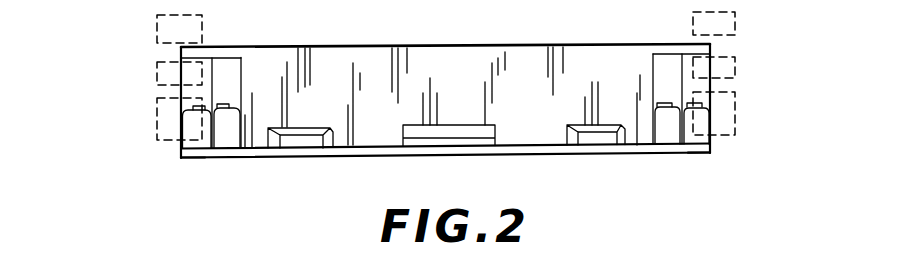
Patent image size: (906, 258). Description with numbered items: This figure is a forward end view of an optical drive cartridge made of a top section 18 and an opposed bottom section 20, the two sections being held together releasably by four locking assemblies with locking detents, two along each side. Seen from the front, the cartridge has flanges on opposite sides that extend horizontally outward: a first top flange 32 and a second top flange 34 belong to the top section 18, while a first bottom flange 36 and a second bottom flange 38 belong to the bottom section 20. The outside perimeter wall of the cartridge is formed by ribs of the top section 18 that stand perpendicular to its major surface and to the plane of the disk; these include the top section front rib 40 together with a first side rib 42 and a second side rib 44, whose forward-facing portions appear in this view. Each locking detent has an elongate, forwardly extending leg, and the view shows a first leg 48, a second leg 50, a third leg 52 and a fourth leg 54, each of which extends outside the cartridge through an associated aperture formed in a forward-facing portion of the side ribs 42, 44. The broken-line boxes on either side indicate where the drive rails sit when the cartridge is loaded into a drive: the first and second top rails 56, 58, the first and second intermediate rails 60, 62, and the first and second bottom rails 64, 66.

The top section 18 is at (460, 53).
The bottom section 20 is at (642, 152).
The first top flange 32 is at (181, 48).
The second top flange 34 is at (710, 45).
The first bottom flange 36 is at (185, 158).
The second bottom flange 38 is at (710, 152).
The top section front rib 40 is at (548, 127).
The first side rib 42 is at (229, 68).
The second side rib 44 is at (665, 63).
The first leg 48 is at (190, 128).
The second leg 50 is at (227, 137).
The third leg 52 is at (665, 130).
The fourth leg 54 is at (688, 125).
The first top rail 56 is at (157, 30).
The second top rail 58 is at (735, 18).
The first intermediate rail 60 is at (157, 80).
The second intermediate rail 62 is at (735, 70).
The first bottom rail 64 is at (157, 110).
The second bottom rail 66 is at (735, 110).